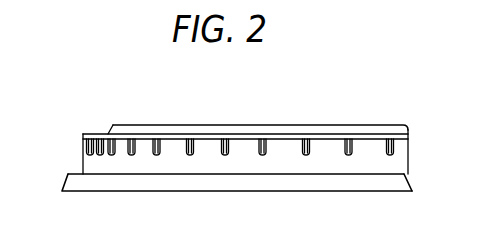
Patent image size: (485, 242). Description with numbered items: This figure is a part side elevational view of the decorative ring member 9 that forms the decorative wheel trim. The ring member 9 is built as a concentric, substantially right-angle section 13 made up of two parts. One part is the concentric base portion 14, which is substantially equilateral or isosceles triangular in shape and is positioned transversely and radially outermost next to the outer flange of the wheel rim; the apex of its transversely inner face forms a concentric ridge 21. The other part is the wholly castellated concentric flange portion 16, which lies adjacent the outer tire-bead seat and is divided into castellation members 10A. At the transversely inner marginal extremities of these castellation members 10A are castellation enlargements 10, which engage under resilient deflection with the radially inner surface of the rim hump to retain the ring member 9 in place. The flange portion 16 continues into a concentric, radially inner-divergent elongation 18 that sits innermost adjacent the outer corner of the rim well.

The decorative ring member 9 is at (307, 110).
The castellation enlargements 10 is at (83, 134).
The castellation members 10A is at (207, 143).
The right-angle section 13 is at (81, 158).
The base portion 14 is at (127, 185).
The flange portion 16 is at (110, 163).
The elongation 18 is at (137, 125).
The ridge 21 is at (388, 177).